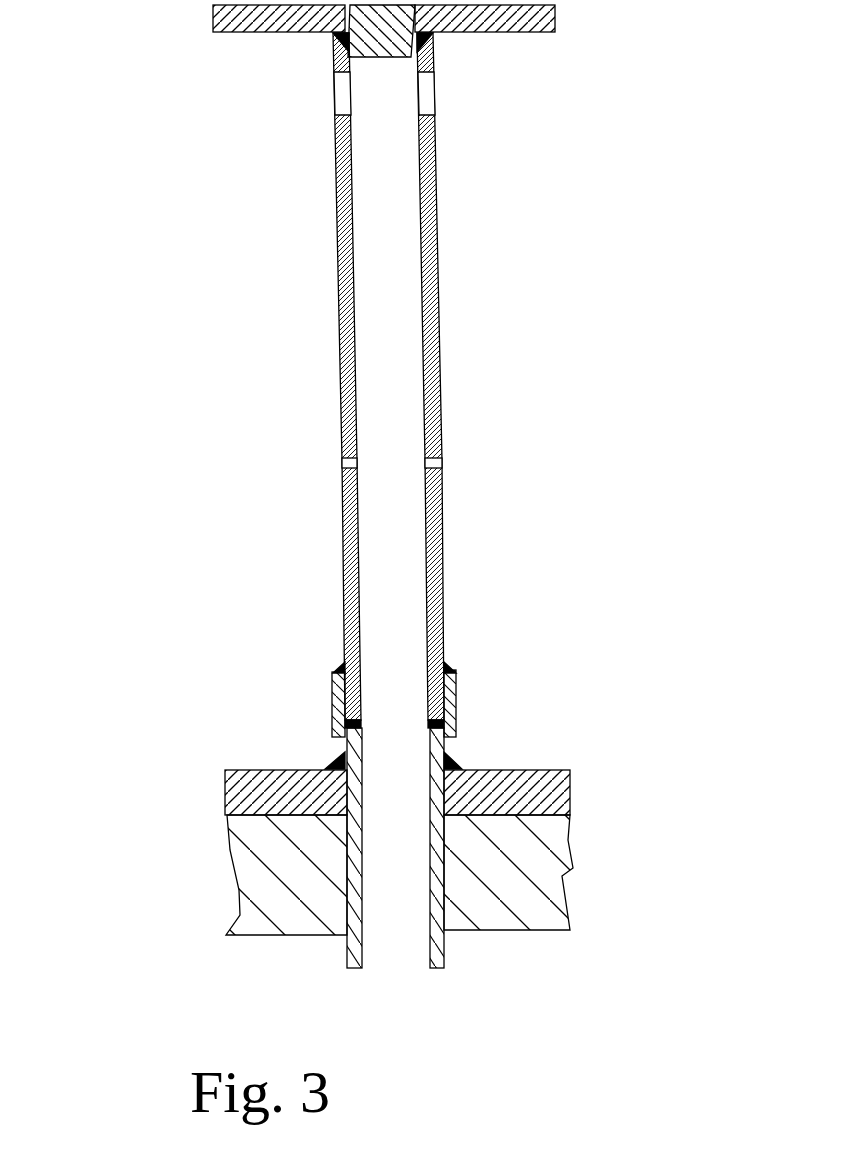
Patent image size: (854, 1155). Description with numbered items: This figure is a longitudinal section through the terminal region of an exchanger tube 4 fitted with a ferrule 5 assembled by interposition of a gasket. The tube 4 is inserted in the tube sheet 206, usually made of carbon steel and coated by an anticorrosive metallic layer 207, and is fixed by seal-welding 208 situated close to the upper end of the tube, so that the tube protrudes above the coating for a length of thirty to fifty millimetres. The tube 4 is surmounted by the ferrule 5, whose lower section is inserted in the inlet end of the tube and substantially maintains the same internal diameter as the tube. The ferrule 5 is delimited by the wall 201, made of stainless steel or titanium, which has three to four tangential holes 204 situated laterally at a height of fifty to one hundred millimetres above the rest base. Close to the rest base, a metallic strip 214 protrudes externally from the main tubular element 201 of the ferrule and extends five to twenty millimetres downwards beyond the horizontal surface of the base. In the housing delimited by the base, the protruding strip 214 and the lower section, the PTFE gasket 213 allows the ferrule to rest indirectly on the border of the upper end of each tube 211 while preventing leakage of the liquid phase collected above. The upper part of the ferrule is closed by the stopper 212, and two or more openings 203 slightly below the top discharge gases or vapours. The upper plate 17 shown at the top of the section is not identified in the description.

The upper wall plate 17 is at (287, 15).
The stopper 212 is at (398, 33).
The openings 203 is at (343, 95).
The ferrule 5 is at (383, 275).
The wall 201 is at (428, 383).
The tangential holes 204 is at (358, 465).
The metallic strip 214 is at (450, 693).
The seal-welding 208 is at (335, 758).
The gasket 213 is at (446, 725).
The anticorrosive metallic layer 207 is at (278, 803).
The tube sheet 206 is at (285, 863).
The tube 211 is at (440, 857).
The tube 4 is at (405, 917).